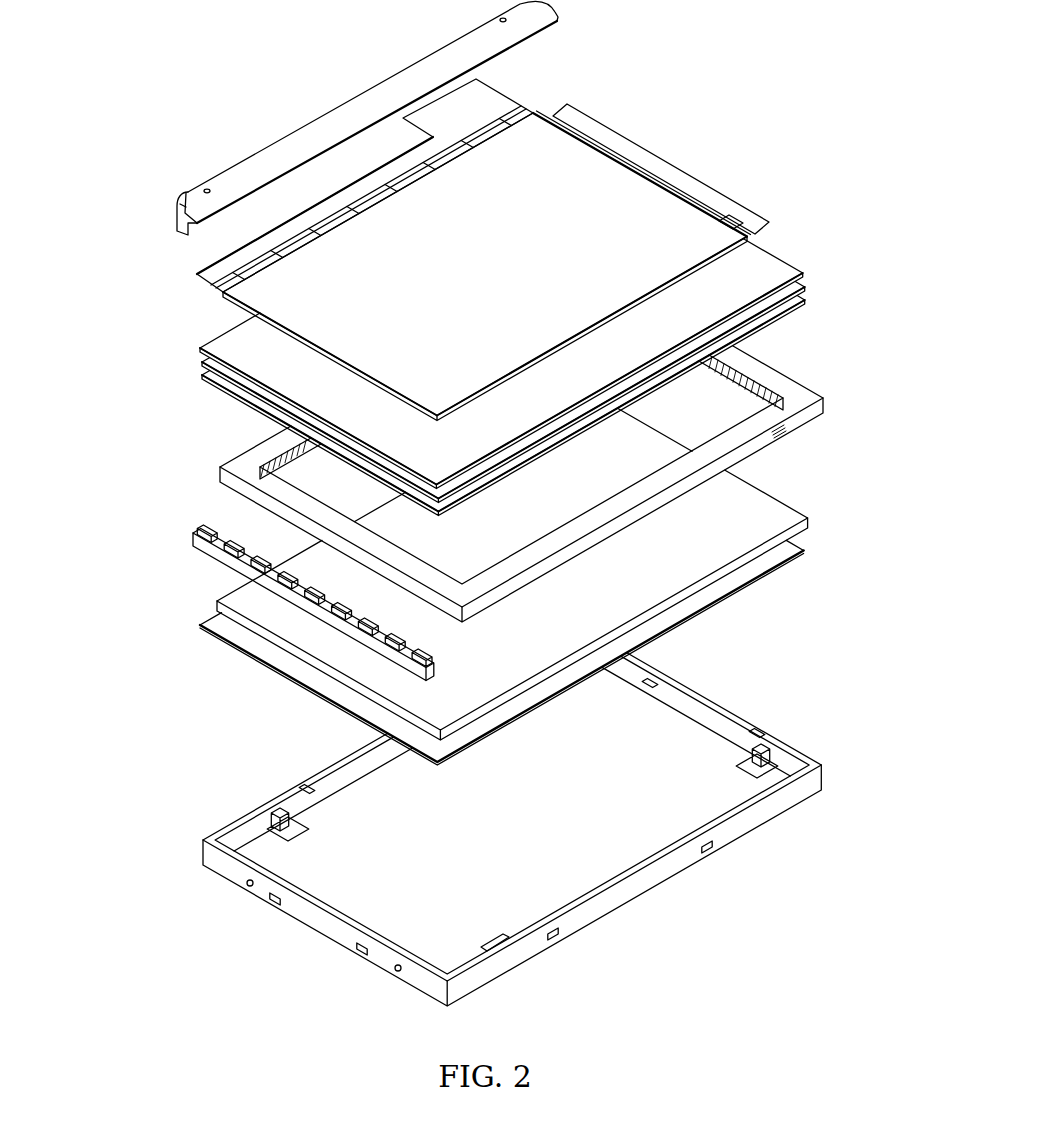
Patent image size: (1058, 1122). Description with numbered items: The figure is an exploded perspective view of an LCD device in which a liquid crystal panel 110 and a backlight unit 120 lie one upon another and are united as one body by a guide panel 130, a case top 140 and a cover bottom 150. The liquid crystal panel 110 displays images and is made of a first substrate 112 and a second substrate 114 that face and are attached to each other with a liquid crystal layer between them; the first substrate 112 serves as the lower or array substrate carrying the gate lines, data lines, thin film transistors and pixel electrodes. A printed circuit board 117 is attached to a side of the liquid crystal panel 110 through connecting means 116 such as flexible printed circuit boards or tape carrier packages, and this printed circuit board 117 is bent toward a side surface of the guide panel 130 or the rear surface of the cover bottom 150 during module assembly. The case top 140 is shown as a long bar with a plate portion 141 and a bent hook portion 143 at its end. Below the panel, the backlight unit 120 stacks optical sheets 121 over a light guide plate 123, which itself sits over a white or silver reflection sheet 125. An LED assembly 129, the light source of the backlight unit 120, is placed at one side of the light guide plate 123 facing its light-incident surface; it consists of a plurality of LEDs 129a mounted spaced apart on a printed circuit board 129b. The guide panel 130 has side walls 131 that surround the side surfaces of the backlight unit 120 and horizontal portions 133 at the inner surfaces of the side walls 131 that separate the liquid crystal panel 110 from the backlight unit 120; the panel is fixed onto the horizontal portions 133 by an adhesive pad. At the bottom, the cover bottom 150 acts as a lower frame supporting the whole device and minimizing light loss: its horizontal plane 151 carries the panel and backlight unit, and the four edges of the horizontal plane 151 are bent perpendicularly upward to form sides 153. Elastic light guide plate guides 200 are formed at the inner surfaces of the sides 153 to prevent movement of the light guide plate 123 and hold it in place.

The liquid crystal panel 110 is at (510, 239).
The first substrate 112 is at (748, 242).
The second substrate 114 is at (718, 233).
The connecting means 116 is at (552, 118).
The printed circuit board 117 is at (498, 96).
The backlight unit 120 is at (428, 502).
The optical sheets 121 is at (193, 343).
The light guide plate 123 is at (236, 594).
The reflection sheet 125 is at (456, 652).
The light-emitting diode assembly 129 is at (267, 579).
The LEDs 129a is at (207, 528).
The printed circuit board 129b is at (194, 538).
The guide panel 130 is at (570, 484).
The side walls 131 is at (551, 509).
The horizontal portions 133 is at (797, 401).
The case top 140 is at (309, 118).
The top chassis plate 141 is at (186, 198).
The top chassis hook 143 is at (183, 218).
The cover bottom 150 is at (519, 821).
The horizontal plane 151 is at (692, 742).
The sides 153 is at (688, 700).
The light guide plate guides 200 is at (776, 744).